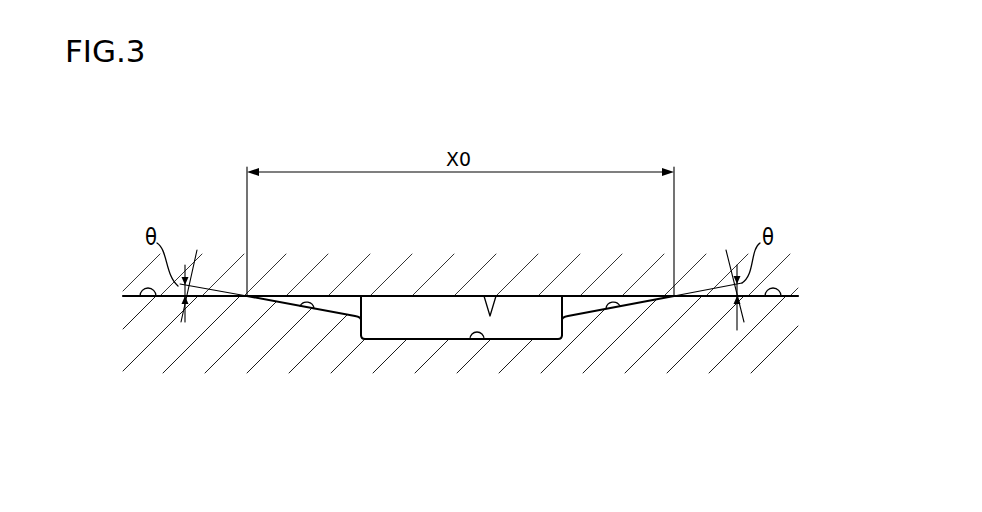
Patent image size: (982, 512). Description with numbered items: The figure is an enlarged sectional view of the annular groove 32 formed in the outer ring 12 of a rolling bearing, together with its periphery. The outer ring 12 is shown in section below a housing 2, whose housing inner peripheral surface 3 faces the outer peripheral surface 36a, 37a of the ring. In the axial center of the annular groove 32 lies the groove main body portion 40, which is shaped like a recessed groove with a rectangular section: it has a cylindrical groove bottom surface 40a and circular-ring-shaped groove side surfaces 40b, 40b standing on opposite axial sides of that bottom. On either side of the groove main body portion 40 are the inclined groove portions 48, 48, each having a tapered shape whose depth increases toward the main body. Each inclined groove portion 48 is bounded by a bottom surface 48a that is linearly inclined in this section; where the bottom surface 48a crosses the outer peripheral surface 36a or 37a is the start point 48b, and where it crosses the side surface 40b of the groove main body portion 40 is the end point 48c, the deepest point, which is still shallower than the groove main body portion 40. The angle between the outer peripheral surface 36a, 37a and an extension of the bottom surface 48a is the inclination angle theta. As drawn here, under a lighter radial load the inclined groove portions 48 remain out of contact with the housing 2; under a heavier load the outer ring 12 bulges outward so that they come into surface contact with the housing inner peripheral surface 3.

The housing 2 is at (221, 290).
The housing inner peripheral surface 3 is at (208, 303).
The outer ring 12 is at (695, 347).
The annular groove 32 is at (490, 296).
The outer peripheral surface 36a is at (145, 300).
The outer peripheral surface 37a is at (775, 300).
The groove main body portion 40 is at (463, 338).
The groove bottom surface 40a is at (472, 340).
The groove side surfaces 40b is at (364, 330).
The inclined groove portions 48 is at (295, 296).
The bottom surface of the inclined groove portion 48a is at (303, 310).
The start point 48b is at (247, 296).
The end point 48c is at (358, 296).